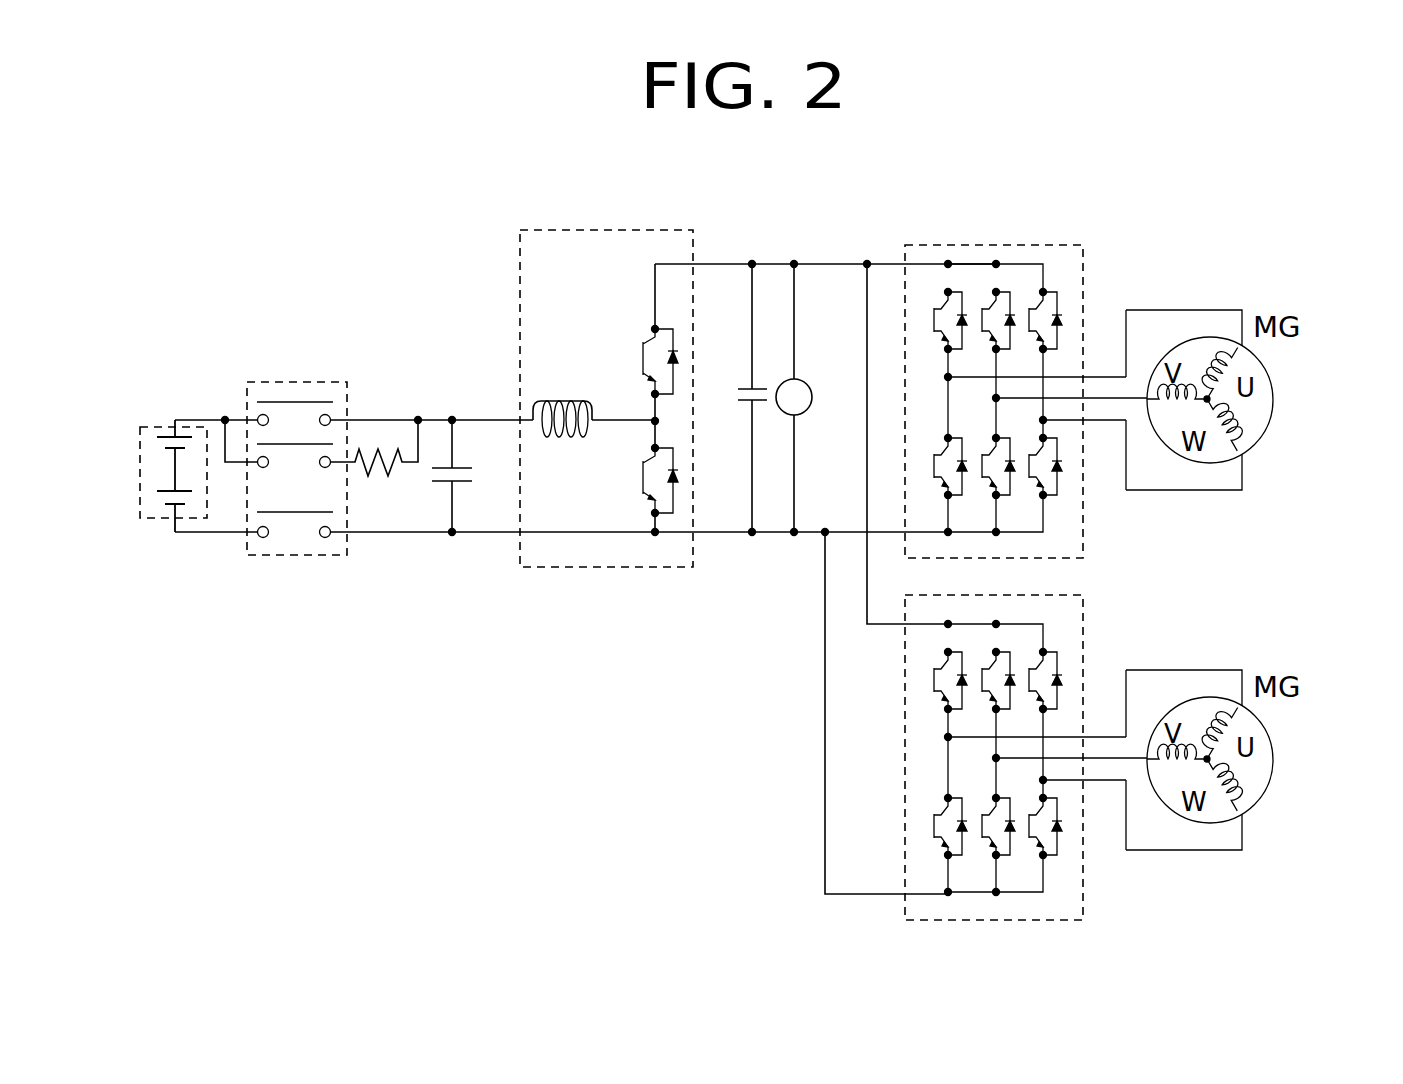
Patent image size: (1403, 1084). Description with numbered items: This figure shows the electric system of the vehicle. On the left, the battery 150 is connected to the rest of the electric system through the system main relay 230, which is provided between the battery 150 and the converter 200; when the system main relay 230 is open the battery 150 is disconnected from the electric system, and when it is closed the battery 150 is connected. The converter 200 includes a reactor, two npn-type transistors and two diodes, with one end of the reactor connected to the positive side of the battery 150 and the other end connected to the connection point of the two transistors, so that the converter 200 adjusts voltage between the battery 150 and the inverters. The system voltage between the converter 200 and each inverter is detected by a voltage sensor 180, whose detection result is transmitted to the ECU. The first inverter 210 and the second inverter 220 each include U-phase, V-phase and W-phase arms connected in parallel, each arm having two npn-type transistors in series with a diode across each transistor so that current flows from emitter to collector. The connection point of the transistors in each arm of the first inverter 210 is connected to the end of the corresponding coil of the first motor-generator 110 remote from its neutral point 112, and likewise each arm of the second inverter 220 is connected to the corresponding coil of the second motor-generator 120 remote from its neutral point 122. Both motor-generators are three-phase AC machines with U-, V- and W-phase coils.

The battery 150 is at (160, 418).
The system main relay 230 is at (292, 382).
The converter 200 is at (672, 230).
The voltage sensor 180 is at (810, 413).
The first inverter 210 is at (1085, 503).
The second inverter 220 is at (1085, 863).
The first motor-generator 110 is at (1260, 442).
The second motor-generator 120 is at (1260, 798).
The neutral point 112 is at (1207, 398).
The neutral point 122 is at (1207, 758).